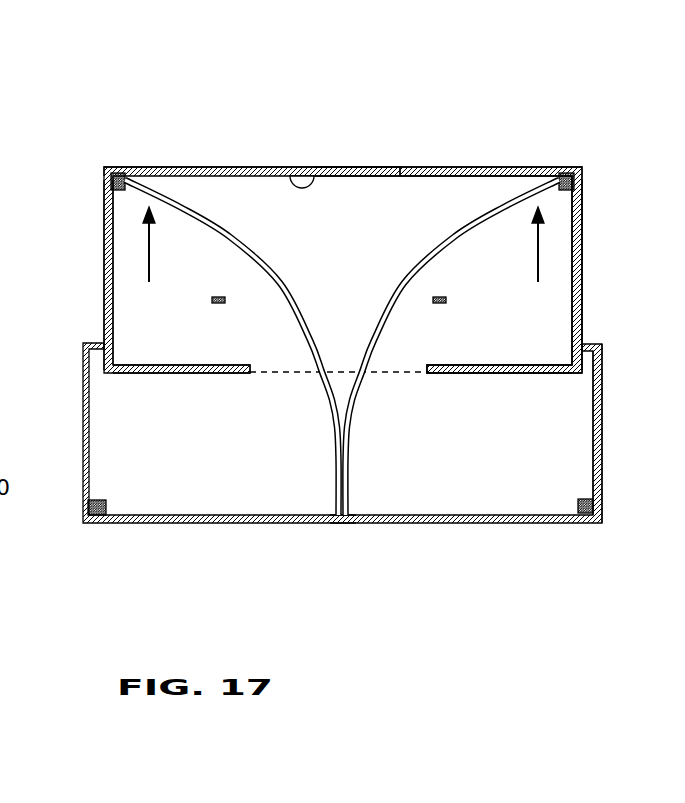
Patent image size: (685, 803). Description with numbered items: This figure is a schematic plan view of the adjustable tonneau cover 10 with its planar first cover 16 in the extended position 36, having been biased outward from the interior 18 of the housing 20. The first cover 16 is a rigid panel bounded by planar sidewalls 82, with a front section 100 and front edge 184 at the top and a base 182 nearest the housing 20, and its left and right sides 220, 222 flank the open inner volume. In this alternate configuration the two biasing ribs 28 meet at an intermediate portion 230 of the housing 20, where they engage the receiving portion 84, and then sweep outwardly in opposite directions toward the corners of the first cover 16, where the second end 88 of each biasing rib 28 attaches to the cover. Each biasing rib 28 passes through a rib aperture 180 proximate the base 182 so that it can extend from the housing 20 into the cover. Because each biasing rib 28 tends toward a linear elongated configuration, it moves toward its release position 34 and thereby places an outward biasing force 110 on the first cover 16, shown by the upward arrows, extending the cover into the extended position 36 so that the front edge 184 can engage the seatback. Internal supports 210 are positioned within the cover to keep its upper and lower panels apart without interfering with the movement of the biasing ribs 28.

The adjustable tonneau cover 10 is at (240, 125).
The first cover 16 is at (462, 142).
The interior 18 is at (455, 502).
The housing 20 is at (600, 482).
The biasing rib 28 is at (250, 243).
The release position 34 is at (402, 268).
The extended position 36 is at (217, 165).
The sidewall 82 is at (110, 182).
The receiving portion 84 is at (85, 517).
The second end 88 is at (150, 174).
The front section 100 is at (313, 167).
The outward biasing force 110 is at (152, 260).
The rib aperture 180 is at (505, 385).
The base 182 is at (208, 377).
The front edge 184 is at (349, 165).
The internal support 210 is at (445, 297).
The left side 220 is at (100, 215).
The right side 222 is at (587, 258).
The intermediate portion 230 is at (343, 538).